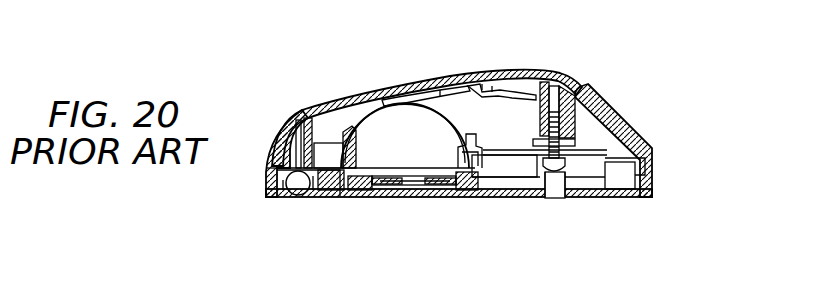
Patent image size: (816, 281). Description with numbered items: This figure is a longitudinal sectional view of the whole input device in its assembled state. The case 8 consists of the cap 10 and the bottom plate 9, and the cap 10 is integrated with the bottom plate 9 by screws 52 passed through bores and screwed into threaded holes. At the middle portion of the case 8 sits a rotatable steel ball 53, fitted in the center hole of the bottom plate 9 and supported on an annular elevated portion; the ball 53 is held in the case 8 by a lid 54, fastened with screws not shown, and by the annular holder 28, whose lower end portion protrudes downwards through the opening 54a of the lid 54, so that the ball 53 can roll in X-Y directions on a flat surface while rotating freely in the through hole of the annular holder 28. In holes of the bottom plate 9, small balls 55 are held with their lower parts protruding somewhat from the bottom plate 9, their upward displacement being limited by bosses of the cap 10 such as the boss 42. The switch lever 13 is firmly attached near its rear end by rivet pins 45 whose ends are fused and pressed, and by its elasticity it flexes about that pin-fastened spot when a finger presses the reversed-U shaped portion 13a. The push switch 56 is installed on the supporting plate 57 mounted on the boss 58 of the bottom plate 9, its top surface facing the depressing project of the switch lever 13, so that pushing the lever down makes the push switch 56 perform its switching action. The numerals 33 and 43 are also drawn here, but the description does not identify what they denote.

The case 8 is at (456, 74).
The bottom plate 9 is at (484, 197).
The cap 10 is at (300, 106).
The switch lever 13 is at (562, 50).
The reversed-U shaped portion 13a is at (598, 92).
The annular holder 28 is at (333, 142).
The holder block 33 is at (366, 142).
The boss 42 is at (270, 152).
The inner member 43 is at (424, 94).
The rivet pin 45 is at (485, 74).
The screw 52 is at (553, 172).
The steel ball 53 is at (400, 160).
The lid 54 is at (358, 197).
The opening 54a is at (428, 193).
The small ball 55 is at (300, 196).
The push switch 56 is at (575, 96).
The supporting plate 57 is at (513, 195).
The boss 58 is at (582, 195).